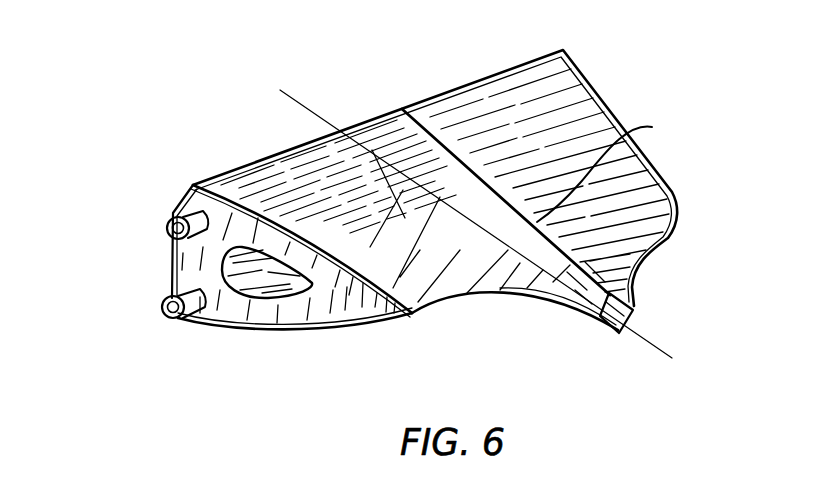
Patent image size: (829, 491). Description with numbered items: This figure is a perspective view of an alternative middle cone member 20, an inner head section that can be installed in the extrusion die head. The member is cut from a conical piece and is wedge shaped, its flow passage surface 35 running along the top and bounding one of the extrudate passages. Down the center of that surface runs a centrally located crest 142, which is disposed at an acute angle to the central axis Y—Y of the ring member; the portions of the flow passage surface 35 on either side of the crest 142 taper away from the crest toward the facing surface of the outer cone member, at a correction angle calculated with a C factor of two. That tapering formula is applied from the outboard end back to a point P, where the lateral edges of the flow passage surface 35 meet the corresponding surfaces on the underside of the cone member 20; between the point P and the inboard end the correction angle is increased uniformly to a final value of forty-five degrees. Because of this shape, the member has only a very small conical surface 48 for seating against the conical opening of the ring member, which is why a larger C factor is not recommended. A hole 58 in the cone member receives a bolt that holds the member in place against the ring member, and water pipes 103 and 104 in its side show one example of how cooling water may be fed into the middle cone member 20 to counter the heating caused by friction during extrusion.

The middle cone member 20 is at (482, 61).
The flow passage surface 35 is at (281, 185).
The centrally located crest 142 is at (566, 180).
The water pipe 103 is at (184, 214).
The water pipe 104 is at (171, 295).
The hole 58 is at (235, 267).
The conical surface 48 is at (260, 318).
The point P is at (410, 312).
The central axis Y— Y is at (478, 225).